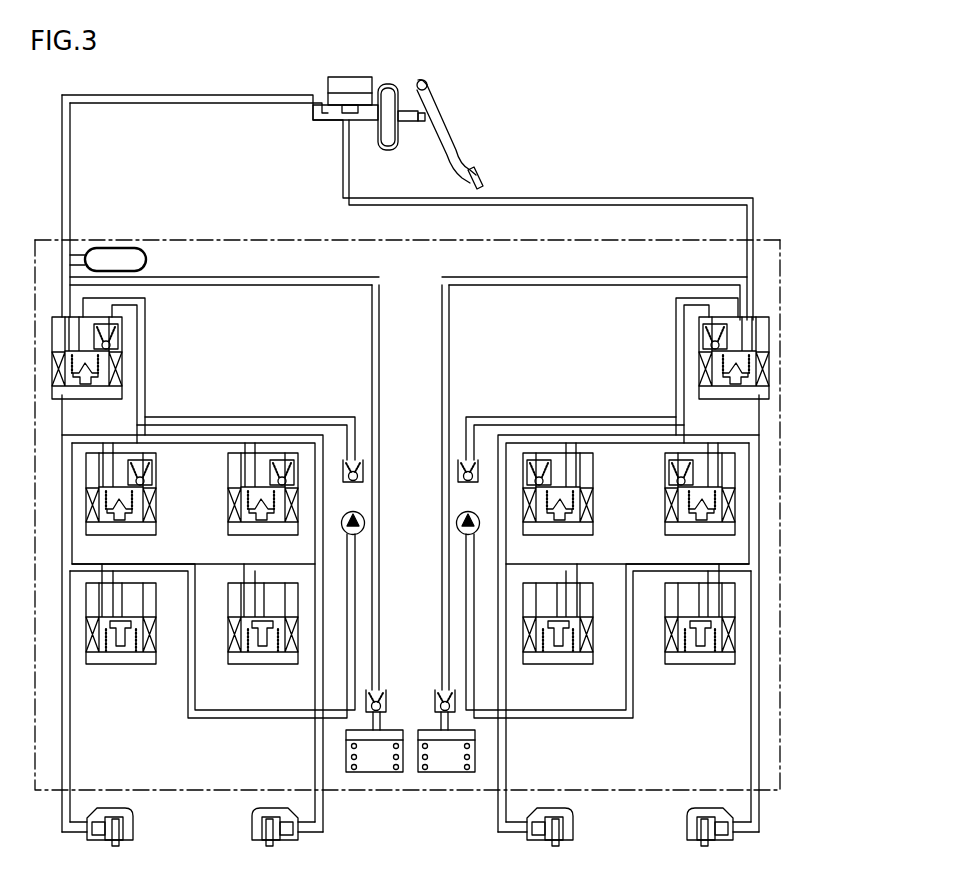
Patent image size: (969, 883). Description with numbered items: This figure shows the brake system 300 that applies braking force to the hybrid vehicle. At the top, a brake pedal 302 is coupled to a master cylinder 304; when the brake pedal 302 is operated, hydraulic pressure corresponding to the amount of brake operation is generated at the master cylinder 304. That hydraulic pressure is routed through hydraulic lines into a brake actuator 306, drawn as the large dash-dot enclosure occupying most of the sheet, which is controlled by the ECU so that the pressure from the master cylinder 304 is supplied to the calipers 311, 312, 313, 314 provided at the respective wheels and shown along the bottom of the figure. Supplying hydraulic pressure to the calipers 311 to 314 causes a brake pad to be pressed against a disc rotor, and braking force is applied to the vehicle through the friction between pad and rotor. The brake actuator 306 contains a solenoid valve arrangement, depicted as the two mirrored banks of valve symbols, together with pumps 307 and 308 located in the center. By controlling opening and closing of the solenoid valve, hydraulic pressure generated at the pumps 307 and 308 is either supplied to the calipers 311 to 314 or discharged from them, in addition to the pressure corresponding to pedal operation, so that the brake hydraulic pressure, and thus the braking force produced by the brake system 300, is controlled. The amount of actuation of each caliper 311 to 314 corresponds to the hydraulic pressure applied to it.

The brake system 300 is at (605, 168).
The brake pedal 302 is at (453, 148).
The master cylinder 304 is at (323, 123).
The brake actuator 306 is at (228, 238).
The pump 307 is at (363, 513).
The pump 308 is at (456, 531).
The caliper 311 is at (687, 827).
The caliper 312 is at (573, 818).
The caliper 313 is at (253, 827).
The caliper 314 is at (133, 818).